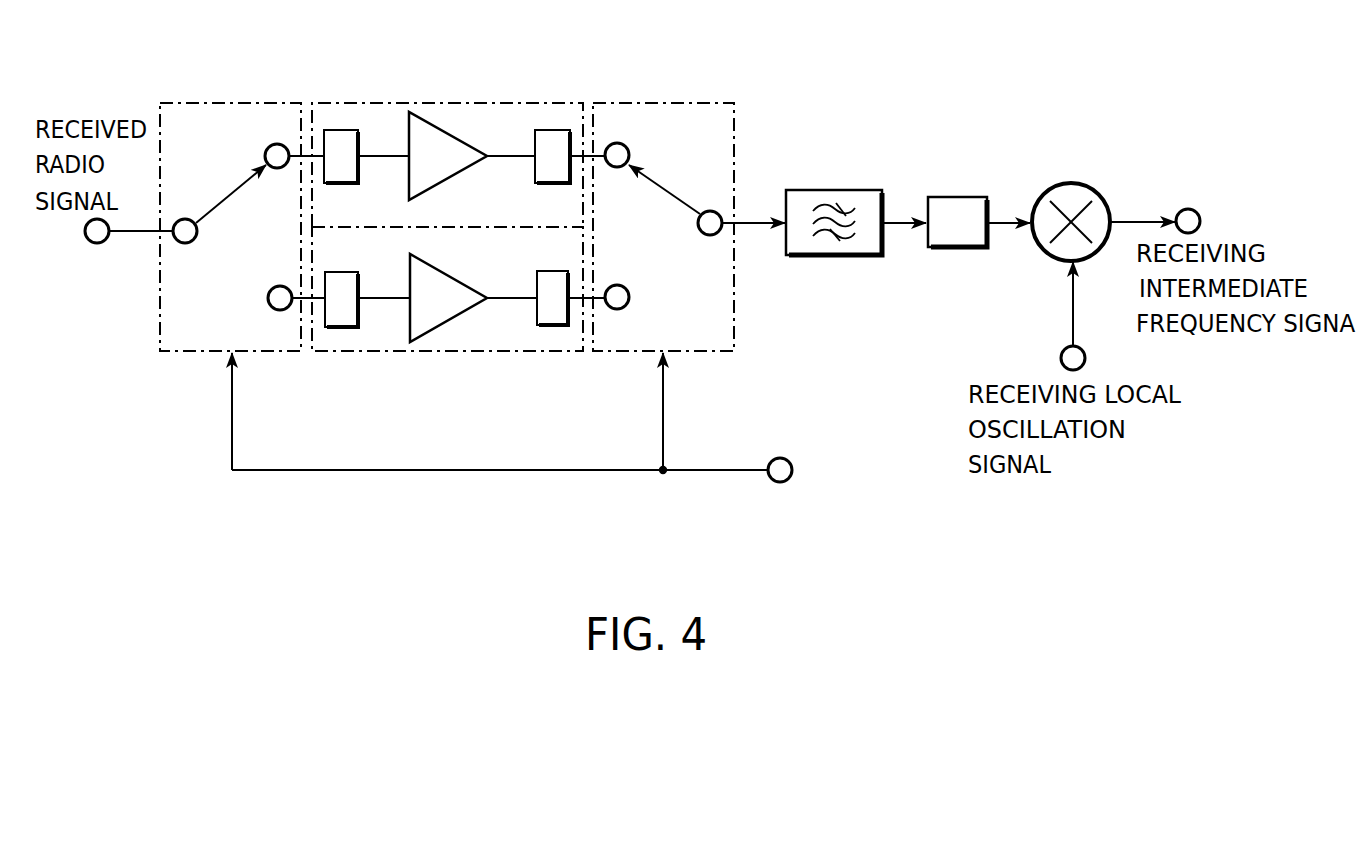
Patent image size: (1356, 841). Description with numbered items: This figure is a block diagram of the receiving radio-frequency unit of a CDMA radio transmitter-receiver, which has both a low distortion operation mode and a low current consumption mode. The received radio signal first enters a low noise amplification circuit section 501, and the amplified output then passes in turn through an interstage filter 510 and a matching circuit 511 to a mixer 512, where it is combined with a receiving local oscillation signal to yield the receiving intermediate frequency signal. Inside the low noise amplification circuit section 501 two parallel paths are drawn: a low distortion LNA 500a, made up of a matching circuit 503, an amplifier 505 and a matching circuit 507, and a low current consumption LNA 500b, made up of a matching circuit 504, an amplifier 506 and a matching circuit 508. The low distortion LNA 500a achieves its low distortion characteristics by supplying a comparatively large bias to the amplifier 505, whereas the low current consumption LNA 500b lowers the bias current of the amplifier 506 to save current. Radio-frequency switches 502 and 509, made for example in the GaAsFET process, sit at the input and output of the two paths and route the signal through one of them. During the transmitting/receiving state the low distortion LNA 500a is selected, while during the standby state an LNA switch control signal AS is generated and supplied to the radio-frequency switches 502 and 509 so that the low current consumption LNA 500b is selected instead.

The low noise amplification circuit section 501 is at (518, 478).
The radio-frequency switch 502 is at (228, 102).
The matching circuit 503 is at (345, 130).
The matching circuit 504 is at (345, 328).
The amplifier 505 is at (445, 131).
The amplifier 506 is at (446, 322).
The matching circuit 507 is at (560, 130).
The matching circuit 508 is at (558, 326).
The radio-frequency switch 509 is at (660, 101).
The interstage filter 510 is at (848, 190).
The matching circuit 511 is at (958, 197).
The mixer 512 is at (1073, 183).
The low distortion LNA 500a is at (389, 101).
The low current consumption LNA 500b is at (388, 352).